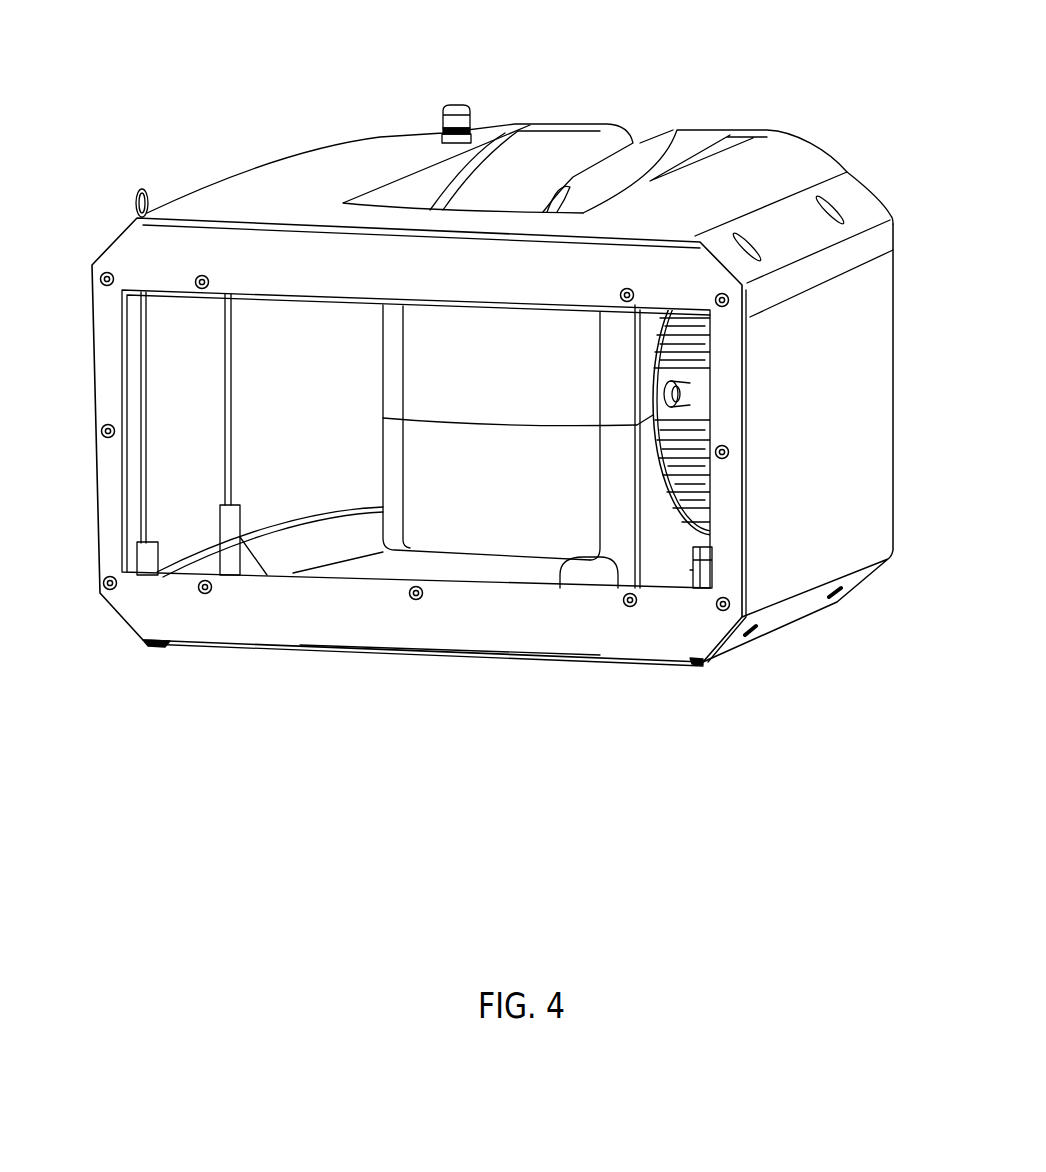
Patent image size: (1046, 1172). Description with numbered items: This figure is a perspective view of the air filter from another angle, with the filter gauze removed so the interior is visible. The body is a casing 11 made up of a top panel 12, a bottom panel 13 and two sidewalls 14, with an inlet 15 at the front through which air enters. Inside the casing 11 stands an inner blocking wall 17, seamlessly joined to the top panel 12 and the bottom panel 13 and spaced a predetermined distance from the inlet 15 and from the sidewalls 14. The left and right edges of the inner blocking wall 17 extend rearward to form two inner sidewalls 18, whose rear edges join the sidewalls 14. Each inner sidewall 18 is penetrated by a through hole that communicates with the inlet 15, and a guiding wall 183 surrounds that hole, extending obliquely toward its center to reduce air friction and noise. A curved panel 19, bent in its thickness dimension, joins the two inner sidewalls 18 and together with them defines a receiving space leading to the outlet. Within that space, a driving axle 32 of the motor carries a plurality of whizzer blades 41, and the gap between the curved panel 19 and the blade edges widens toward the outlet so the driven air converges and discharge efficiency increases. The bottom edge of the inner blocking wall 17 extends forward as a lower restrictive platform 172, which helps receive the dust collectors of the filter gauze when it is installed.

The casing 11 is at (220, 176).
The top panel 12 is at (288, 175).
The bottom panel 13 is at (473, 653).
The sidewall 14 is at (163, 413).
The inlet 15 is at (297, 578).
The inner blocking wall 17 is at (543, 477).
The lower restrictive platform 172 is at (537, 557).
The inner sidewall 18 is at (662, 543).
The guiding wall 183 is at (697, 510).
The curved panel 19 is at (473, 190).
The driving axle 32 is at (680, 397).
The whizzer blades 41 is at (703, 418).